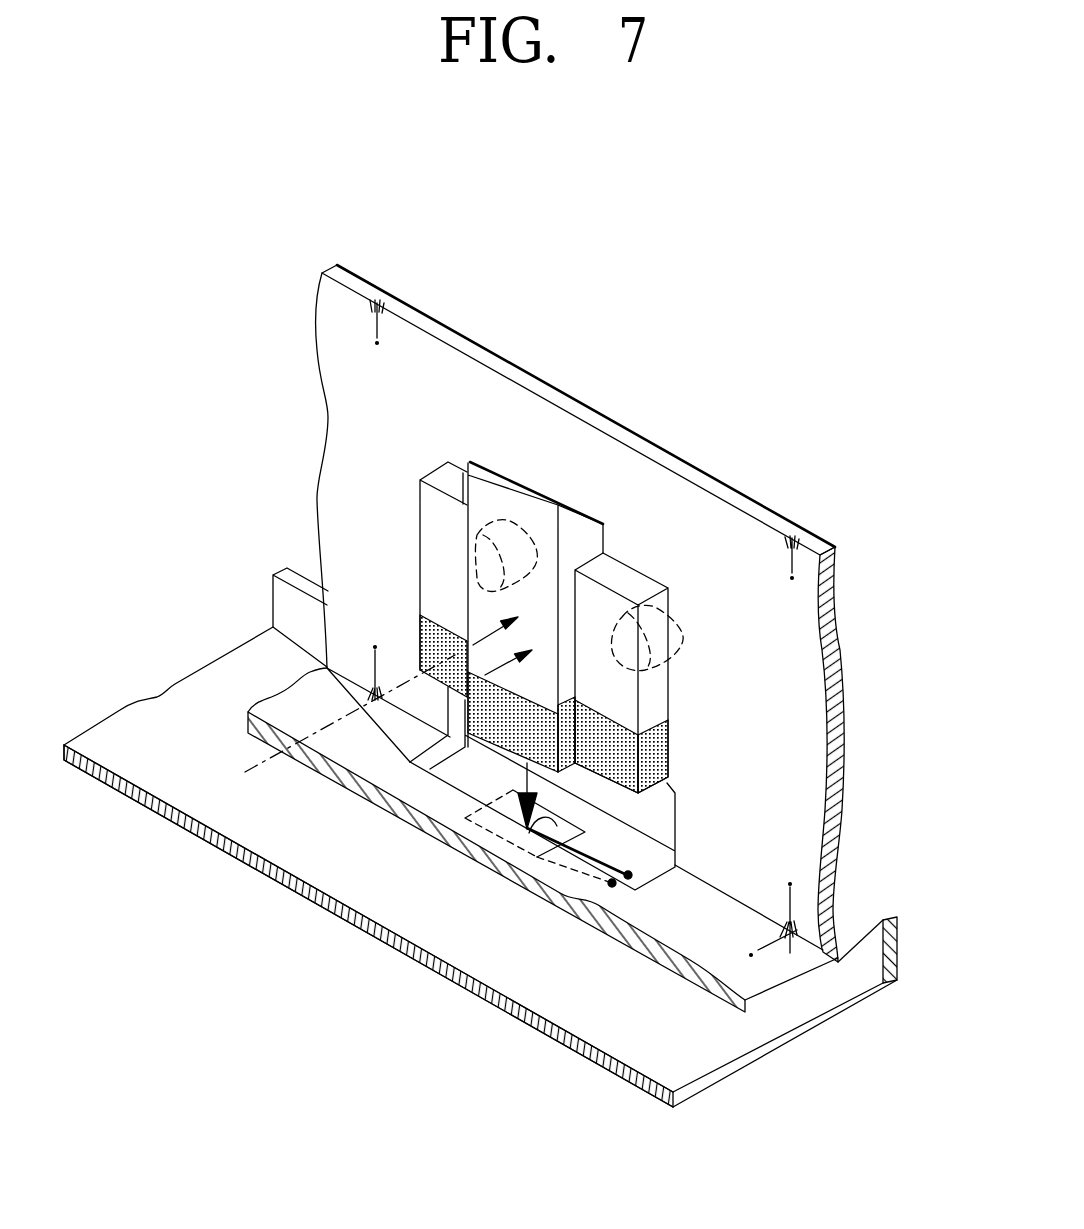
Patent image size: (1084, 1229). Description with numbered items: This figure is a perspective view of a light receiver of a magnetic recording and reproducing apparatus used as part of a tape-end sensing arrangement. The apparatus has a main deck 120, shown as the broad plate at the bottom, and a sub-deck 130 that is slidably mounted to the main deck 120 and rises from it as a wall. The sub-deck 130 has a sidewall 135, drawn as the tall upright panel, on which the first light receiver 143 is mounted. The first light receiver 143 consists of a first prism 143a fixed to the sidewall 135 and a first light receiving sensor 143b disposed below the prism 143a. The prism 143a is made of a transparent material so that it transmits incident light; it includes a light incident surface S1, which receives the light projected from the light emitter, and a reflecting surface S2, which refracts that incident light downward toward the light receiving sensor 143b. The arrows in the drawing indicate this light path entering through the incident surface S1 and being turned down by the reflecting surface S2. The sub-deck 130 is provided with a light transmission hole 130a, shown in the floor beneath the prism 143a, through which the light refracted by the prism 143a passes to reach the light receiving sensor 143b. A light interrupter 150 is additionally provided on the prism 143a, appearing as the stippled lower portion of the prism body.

The main deck 120 is at (167, 707).
The sub-deck 130 is at (599, 638).
The light transmission hole 130a is at (663, 881).
The sidewall 135 is at (770, 518).
The first light receiver 143 is at (451, 847).
The first prism 143a is at (465, 700).
The first light receiving sensor 143b is at (527, 830).
The light interrupter 150 is at (580, 396).
The light incident surface S1 is at (483, 611).
The reflecting surface S2 is at (540, 500).